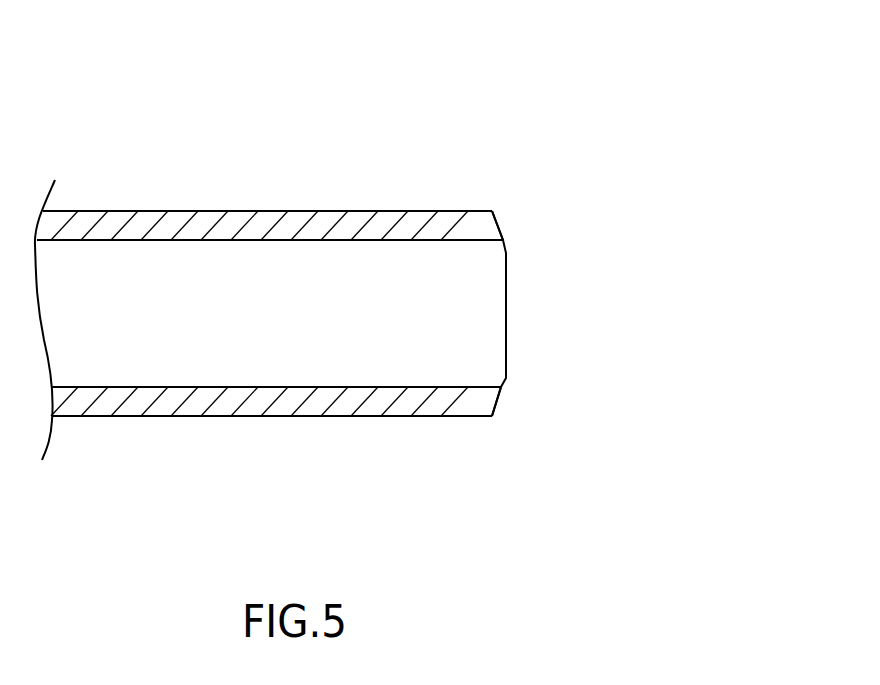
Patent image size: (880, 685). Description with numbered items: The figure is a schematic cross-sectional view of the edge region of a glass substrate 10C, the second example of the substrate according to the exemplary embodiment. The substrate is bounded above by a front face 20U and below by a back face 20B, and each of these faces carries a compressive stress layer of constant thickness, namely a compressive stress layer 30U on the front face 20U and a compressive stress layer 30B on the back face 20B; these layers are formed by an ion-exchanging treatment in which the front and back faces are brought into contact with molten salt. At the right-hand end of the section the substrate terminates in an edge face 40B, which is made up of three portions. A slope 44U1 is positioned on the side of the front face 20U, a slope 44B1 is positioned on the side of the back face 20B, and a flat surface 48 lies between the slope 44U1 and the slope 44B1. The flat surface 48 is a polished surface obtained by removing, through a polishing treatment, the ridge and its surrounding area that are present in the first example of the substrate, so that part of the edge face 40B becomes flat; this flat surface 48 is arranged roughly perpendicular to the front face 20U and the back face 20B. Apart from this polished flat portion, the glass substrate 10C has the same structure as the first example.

The glass substrate 10C is at (615, 25).
The front face 20U is at (328, 208).
The back face 20B is at (270, 420).
The compressive stress layer 30U is at (146, 222).
The compressive stress layer 30B is at (155, 402).
The edge face 40B is at (660, 248).
The slope 44U1 is at (510, 239).
The slope 44B1 is at (509, 394).
The flat surface 48 is at (515, 312).